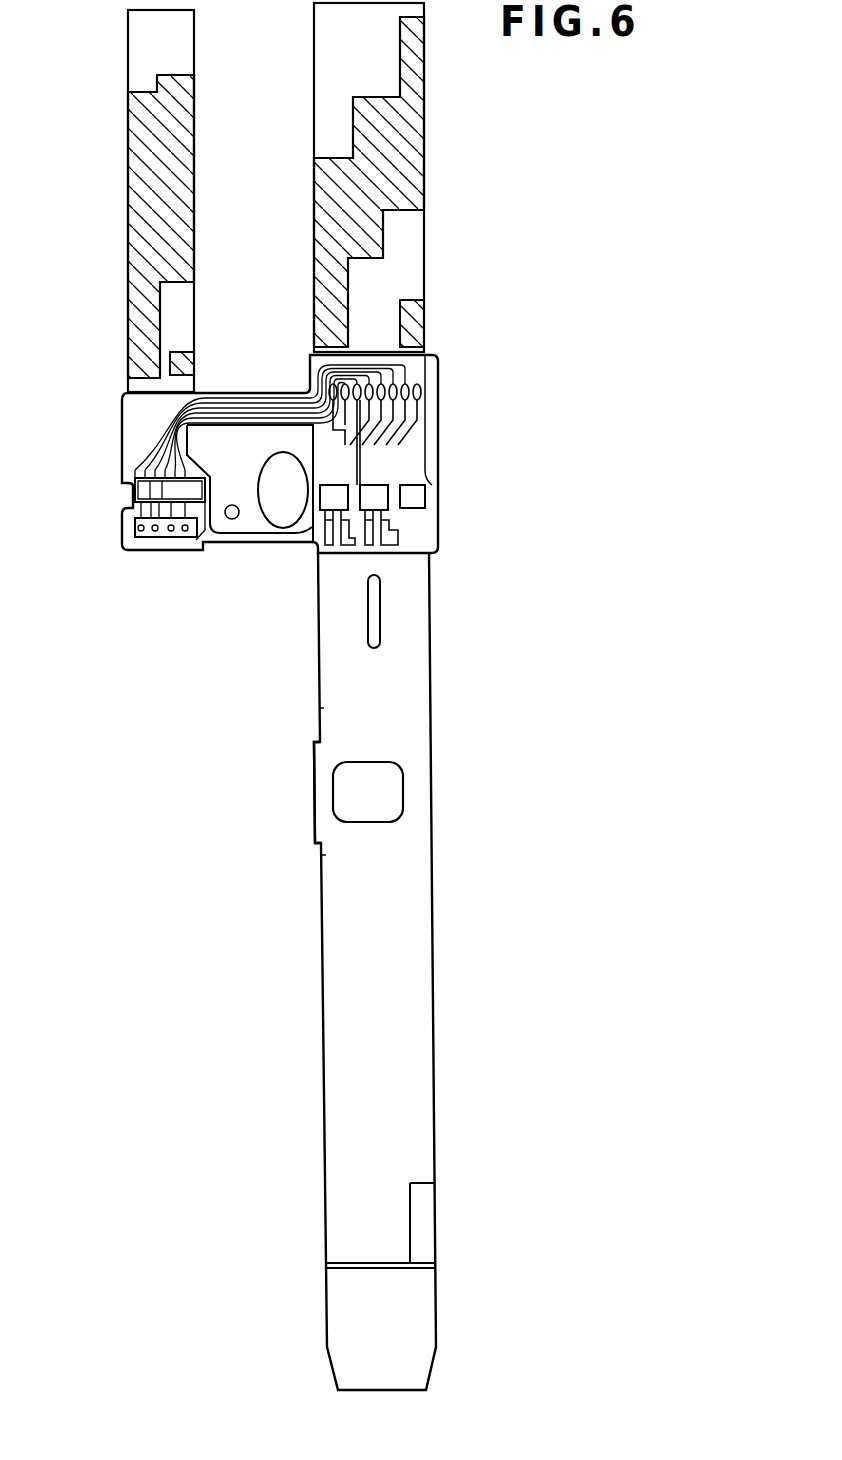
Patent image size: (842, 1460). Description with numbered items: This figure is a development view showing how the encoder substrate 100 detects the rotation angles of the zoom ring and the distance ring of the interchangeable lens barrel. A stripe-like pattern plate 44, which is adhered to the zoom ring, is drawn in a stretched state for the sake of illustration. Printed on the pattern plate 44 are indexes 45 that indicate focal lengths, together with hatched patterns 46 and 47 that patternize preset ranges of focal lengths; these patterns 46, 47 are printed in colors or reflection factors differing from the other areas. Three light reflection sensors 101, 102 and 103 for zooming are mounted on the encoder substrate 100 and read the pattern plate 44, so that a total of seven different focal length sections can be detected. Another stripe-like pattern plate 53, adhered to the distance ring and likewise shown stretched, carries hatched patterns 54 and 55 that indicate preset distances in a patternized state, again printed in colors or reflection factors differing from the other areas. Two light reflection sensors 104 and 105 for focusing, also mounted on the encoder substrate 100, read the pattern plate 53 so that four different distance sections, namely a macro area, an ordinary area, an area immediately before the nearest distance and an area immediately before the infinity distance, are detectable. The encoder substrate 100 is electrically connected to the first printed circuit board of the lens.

The pattern plate 53 is at (175, 44).
The pattern 54 is at (175, 148).
The pattern 55 is at (190, 361).
The pattern 46 is at (395, 168).
The pattern 47 is at (422, 318).
The encoder substrate 100 is at (243, 440).
The light reflection sensor 101 is at (412, 497).
The light reflection sensor 102 is at (378, 488).
The light reflection sensor 103 is at (292, 512).
The light reflection sensor 104 is at (138, 497).
The light reflection sensor 105 is at (180, 502).
The pattern plate 44 is at (412, 996).
The indexes 45 is at (322, 708).